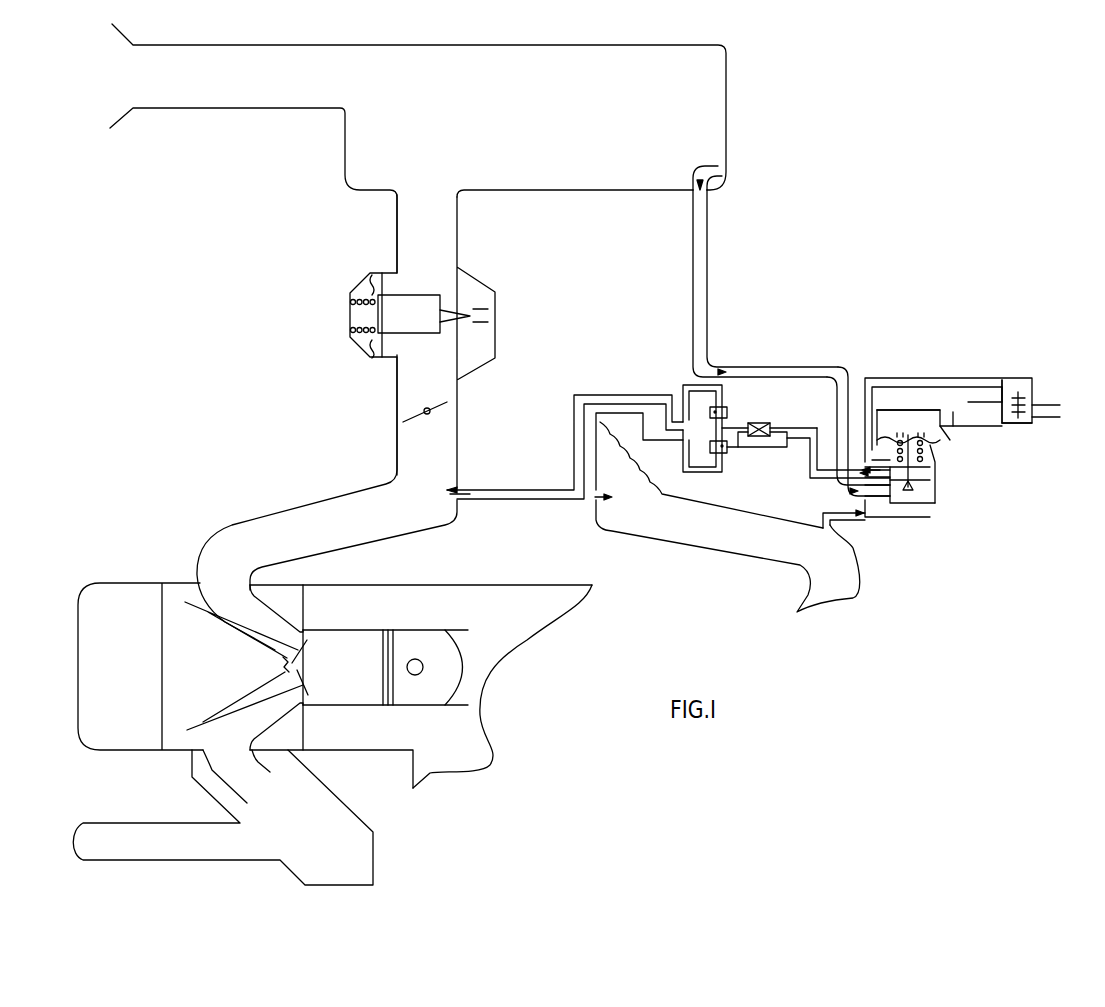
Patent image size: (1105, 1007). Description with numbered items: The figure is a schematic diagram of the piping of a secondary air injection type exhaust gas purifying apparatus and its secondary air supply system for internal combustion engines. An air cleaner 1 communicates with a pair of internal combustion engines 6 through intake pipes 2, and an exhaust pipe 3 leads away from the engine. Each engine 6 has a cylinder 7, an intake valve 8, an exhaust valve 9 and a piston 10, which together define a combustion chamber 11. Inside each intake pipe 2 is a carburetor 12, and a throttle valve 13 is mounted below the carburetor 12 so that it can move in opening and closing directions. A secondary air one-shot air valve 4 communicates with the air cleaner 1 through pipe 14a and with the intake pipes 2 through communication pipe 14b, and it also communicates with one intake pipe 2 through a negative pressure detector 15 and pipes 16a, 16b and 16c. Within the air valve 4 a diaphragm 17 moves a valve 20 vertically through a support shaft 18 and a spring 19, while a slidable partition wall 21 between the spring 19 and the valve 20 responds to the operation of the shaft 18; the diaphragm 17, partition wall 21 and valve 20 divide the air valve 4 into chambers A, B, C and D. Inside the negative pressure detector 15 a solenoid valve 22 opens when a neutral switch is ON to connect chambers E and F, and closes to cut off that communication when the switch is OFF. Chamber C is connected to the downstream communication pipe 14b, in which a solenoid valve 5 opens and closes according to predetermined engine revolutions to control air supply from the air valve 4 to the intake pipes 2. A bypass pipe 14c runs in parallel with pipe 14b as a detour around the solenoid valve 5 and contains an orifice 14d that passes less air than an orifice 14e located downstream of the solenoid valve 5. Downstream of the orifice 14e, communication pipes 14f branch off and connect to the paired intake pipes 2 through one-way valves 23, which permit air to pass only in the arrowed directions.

The air cleaner 1 is at (728, 88).
The intake pipe 2 is at (312, 513).
The exhaust pipe 3 is at (152, 855).
The secondary air one-shot air valve 4 is at (901, 372).
The solenoid valve 5 is at (771, 425).
The internal combustion engine 6 is at (434, 581).
The cylinder 7 is at (366, 596).
The intake valve 8 is at (240, 628).
The exhaust valve 9 is at (215, 727).
The piston 10 is at (425, 632).
The combustion chamber 11 is at (362, 706).
The carburetor 12 is at (418, 333).
The throttle valve 13 is at (440, 411).
The pipe 14a is at (708, 277).
The communication pipe 14b is at (803, 421).
The bypass pipe 14c is at (780, 440).
The orifice 14d is at (770, 448).
The orifice 14e is at (752, 423).
The communication pipe 14f is at (627, 424).
The negative pressure detector 15 is at (1032, 379).
The pipe 16a is at (958, 426).
The pipe 16b is at (962, 367).
The pipe 16c is at (871, 382).
The diaphragm 17 is at (939, 416).
The support shaft 18 is at (936, 464).
The spring 19 is at (902, 447).
The valve 20 is at (914, 497).
The partition wall 21 is at (931, 487).
The solenoid valve 22 is at (1036, 400).
The one-way valve 23 is at (722, 409).
The chamber A is at (908, 409).
The chamber B is at (936, 446).
The chamber C is at (886, 504).
The chamber D is at (906, 504).
The chamber E is at (1007, 379).
The chamber F is at (1024, 424).